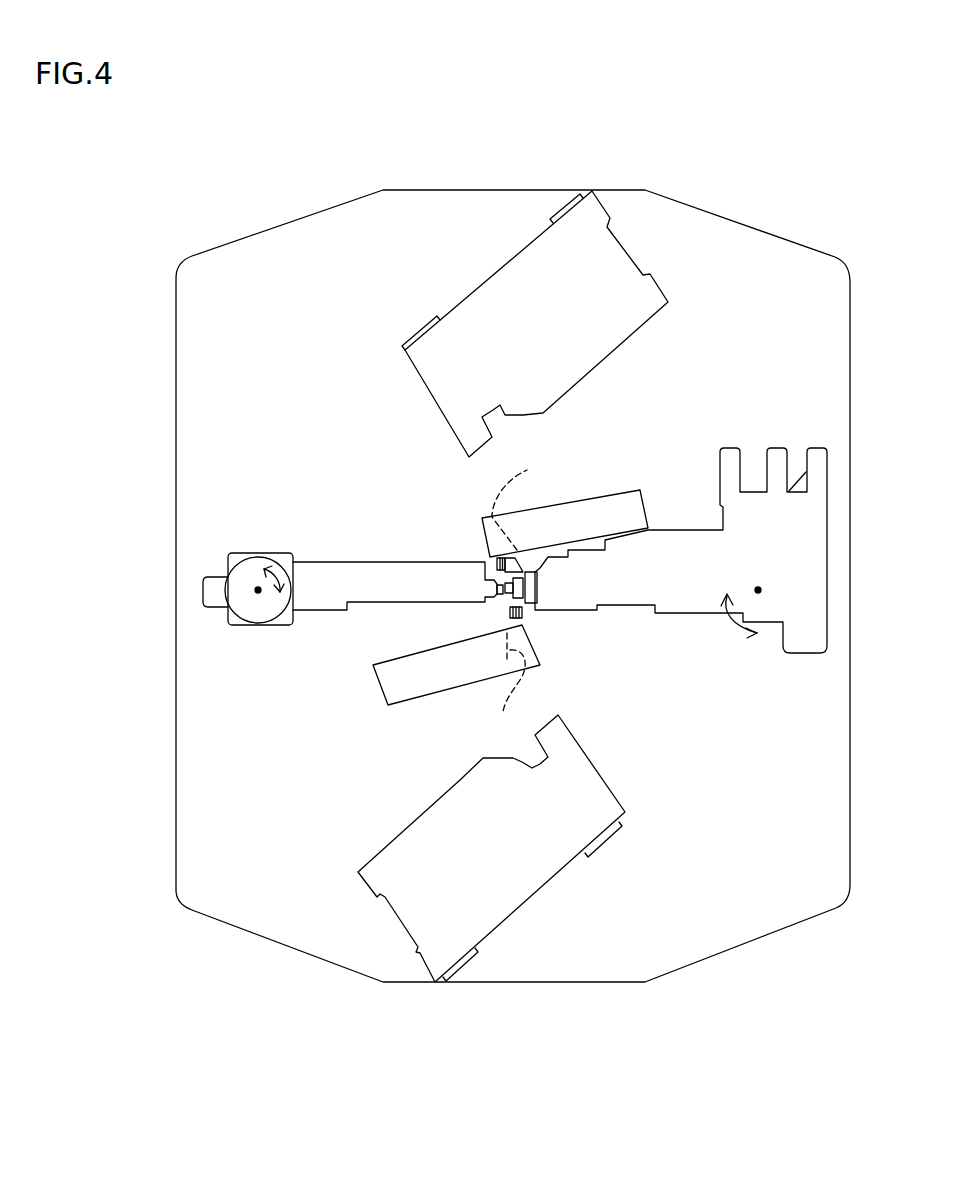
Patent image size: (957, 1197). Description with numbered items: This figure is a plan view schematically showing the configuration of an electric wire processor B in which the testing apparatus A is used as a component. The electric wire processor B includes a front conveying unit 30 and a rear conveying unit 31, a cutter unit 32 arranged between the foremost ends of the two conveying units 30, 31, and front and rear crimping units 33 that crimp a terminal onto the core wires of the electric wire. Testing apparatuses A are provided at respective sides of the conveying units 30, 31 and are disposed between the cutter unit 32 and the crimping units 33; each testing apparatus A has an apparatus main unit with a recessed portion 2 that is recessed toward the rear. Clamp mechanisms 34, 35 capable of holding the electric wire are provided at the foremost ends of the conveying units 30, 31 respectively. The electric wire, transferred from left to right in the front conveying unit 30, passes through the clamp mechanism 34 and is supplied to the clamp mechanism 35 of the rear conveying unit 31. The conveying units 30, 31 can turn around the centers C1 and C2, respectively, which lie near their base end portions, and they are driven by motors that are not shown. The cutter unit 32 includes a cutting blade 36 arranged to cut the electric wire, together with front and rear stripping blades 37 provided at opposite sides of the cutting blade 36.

The electric wire processor B is at (749, 222).
The crimping unit 33 is at (497, 275).
The front conveying unit 30 is at (335, 560).
The center C1 is at (258, 588).
The testing apparatus A is at (640, 490).
The rear conveying unit 31 is at (686, 616).
The center C2 is at (758, 590).
The clamp mechanism 35 is at (538, 588).
The cutter unit 32 is at (535, 616).
The cutting blade 36 is at (500, 598).
The clamp mechanism 34 is at (496, 562).
The stripping blade 37 is at (497, 560).
The recessed portion 2 is at (518, 595).